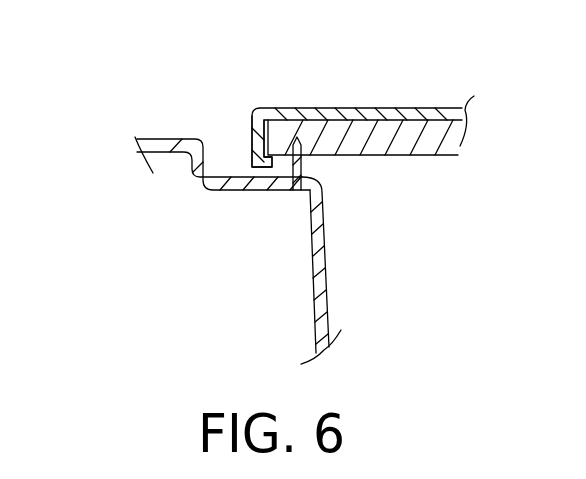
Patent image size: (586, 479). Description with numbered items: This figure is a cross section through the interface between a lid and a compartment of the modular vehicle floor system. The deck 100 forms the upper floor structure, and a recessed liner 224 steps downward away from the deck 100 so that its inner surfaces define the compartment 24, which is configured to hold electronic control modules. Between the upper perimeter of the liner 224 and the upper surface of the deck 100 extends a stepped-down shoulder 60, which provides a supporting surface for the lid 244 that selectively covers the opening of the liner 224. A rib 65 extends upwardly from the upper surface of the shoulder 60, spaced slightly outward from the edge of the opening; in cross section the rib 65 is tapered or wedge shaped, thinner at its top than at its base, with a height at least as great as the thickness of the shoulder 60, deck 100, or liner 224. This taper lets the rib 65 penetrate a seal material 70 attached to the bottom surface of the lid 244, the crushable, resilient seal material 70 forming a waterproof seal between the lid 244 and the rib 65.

The deck 100 is at (158, 139).
The liner 224 is at (308, 306).
The compartment 24 is at (404, 258).
The lid 244 is at (398, 107).
The shoulder 60 is at (250, 152).
The seal material 70 is at (418, 147).
The rib 65 is at (296, 162).